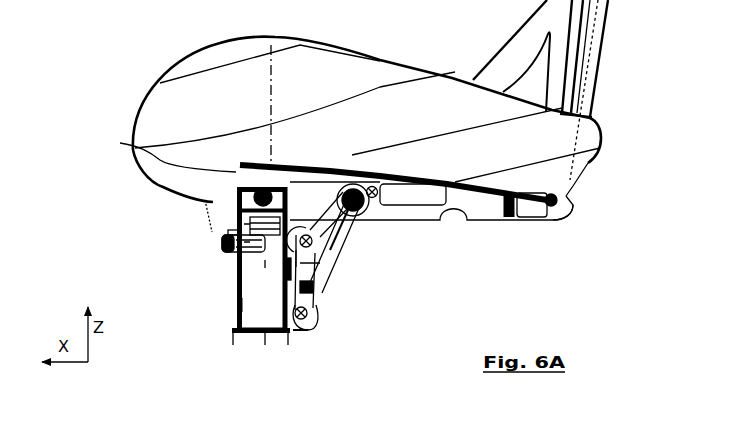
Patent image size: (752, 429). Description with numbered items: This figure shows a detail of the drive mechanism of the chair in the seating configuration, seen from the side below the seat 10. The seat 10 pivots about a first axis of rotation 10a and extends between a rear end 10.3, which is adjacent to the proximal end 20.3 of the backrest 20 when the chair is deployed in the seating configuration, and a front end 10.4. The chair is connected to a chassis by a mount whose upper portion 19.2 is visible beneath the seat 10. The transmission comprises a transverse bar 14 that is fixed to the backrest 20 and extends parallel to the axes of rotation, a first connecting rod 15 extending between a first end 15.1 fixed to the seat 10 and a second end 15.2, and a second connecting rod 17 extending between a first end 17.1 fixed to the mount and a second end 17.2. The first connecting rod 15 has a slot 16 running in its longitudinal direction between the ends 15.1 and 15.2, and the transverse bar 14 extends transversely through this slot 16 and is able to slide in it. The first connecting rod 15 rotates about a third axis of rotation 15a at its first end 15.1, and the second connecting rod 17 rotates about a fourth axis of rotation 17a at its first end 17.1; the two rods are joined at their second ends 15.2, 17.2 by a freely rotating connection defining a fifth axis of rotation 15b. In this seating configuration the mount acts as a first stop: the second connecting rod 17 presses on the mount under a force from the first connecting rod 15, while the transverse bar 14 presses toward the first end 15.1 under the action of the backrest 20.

The seat 10 is at (478, 199).
The first axis of rotation 10a is at (262, 187).
The rear end 10.3 is at (563, 203).
The front end 10.4 is at (245, 172).
The transverse bar 14 is at (366, 222).
The first connecting rod 15 is at (345, 229).
The first end 15.1 is at (355, 181).
The second end 15.2 is at (336, 271).
The third axis of rotation 15a is at (375, 181).
The fifth axis of rotation 15b is at (228, 235).
The slot 16 is at (356, 234).
The second connecting rod 17 is at (307, 299).
The first end 17.1 is at (312, 327).
The second end 17.2 is at (309, 218).
The fourth axis of rotation 17a is at (300, 335).
The upper portion 19.2 is at (238, 303).
The backrest 20 is at (601, 38).
The proximal end 20.3 is at (590, 107).